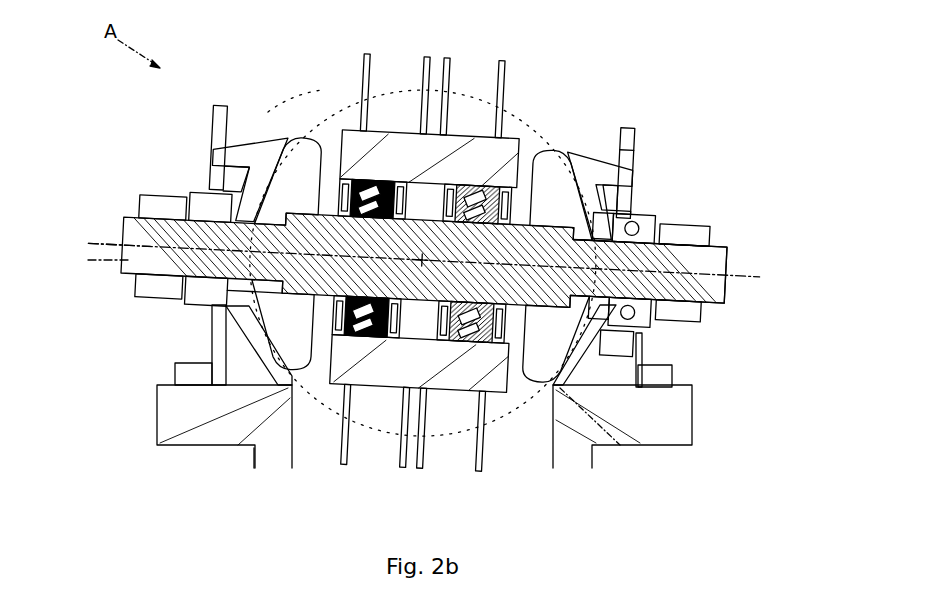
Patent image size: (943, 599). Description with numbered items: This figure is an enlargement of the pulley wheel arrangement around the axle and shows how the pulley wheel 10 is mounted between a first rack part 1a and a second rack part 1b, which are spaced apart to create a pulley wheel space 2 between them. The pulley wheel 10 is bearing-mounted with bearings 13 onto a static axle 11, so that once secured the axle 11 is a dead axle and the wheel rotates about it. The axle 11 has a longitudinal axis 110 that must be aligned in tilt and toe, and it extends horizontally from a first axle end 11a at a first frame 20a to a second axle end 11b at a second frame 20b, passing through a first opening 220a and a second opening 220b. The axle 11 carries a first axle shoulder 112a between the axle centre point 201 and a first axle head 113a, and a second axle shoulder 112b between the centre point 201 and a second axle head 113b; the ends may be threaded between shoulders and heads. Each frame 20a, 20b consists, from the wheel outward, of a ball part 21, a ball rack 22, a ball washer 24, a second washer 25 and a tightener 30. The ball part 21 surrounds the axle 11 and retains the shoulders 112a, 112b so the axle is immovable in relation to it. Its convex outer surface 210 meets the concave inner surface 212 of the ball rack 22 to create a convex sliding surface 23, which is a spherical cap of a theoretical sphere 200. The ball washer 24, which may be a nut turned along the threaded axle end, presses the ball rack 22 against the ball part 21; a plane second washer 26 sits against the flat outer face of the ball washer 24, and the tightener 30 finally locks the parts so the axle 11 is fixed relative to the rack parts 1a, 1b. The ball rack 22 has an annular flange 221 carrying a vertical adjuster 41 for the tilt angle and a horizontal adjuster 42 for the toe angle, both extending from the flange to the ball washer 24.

The theoretical sphere 200 is at (378, 95).
The axle centre point 201 is at (312, 100).
The pulley wheel 10 is at (458, 463).
The bearings 13 is at (496, 222).
The axle 11 is at (353, 285).
The first axle end 11a is at (730, 248).
The second axle end 11b is at (135, 218).
The longitudinal axis 110 is at (112, 242).
The first axle head 113a is at (748, 273).
The second axle head 113b is at (90, 262).
The first axle shoulder 112a is at (645, 345).
The second axle shoulder 112b is at (242, 300).
The ball part 21 is at (546, 160).
The ball rack 22 is at (584, 172).
The convex outer surface 210 is at (623, 124).
The vertical adjuster 41 is at (634, 138).
The annular flange 221 is at (632, 172).
The sliding surface 23 is at (603, 212).
The first opening 220a is at (630, 212).
The second opening 220b is at (206, 196).
The ball washer 24 is at (644, 224).
The second washer 25 is at (690, 224).
The tightener 30 is at (706, 242).
The horizontal adjuster 42 is at (656, 318).
The second washer 26 is at (672, 372).
The first frame 20a is at (696, 390).
The second frame 20b is at (160, 355).
The first rack part 1a is at (678, 431).
The second rack part 1b is at (232, 429).
The pulley wheel space 2 is at (313, 461).
The concave inner surface 212 is at (636, 440).